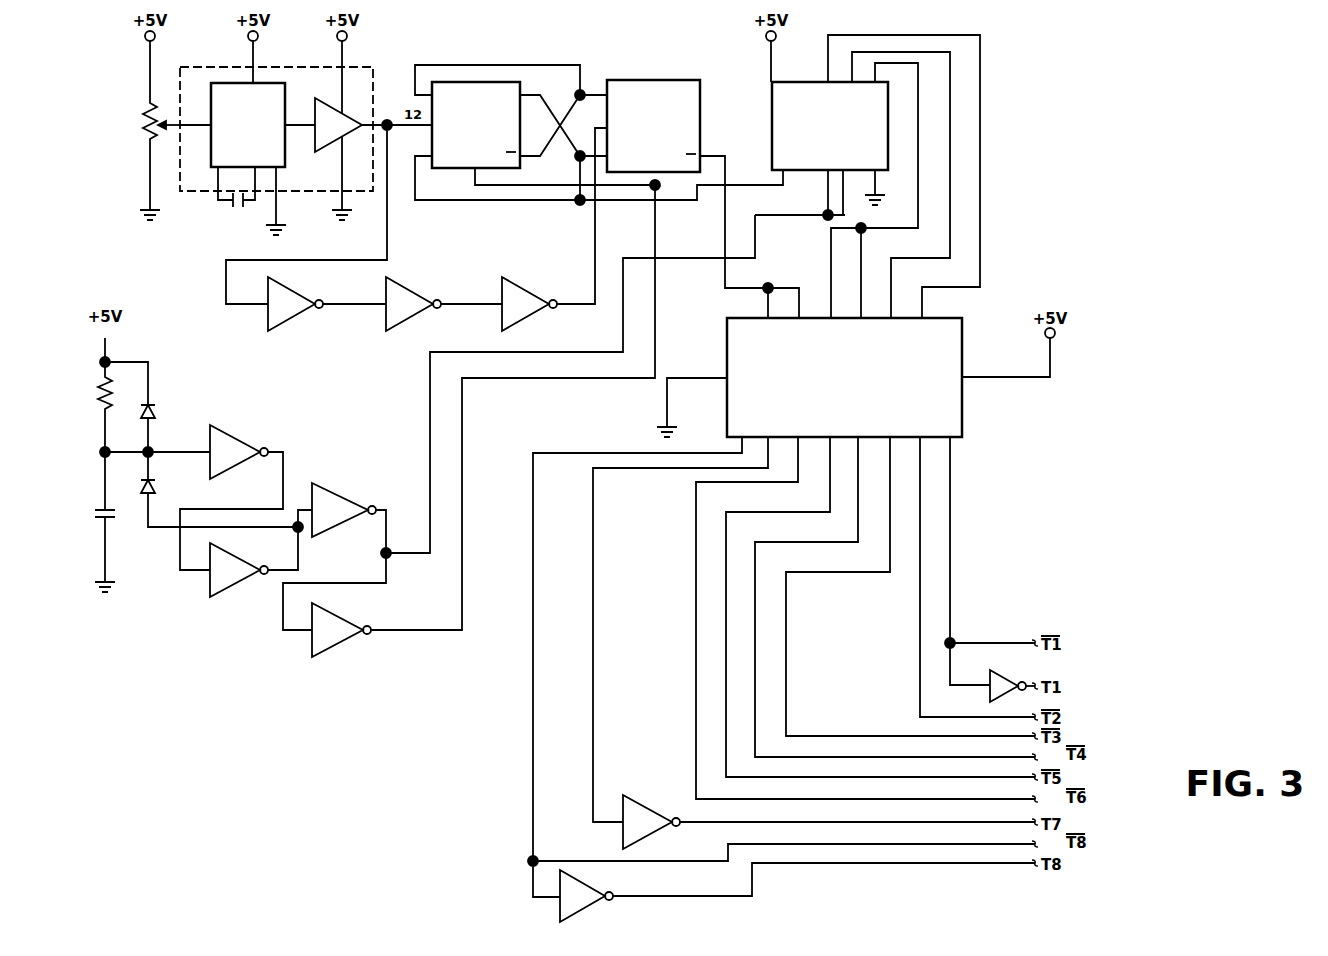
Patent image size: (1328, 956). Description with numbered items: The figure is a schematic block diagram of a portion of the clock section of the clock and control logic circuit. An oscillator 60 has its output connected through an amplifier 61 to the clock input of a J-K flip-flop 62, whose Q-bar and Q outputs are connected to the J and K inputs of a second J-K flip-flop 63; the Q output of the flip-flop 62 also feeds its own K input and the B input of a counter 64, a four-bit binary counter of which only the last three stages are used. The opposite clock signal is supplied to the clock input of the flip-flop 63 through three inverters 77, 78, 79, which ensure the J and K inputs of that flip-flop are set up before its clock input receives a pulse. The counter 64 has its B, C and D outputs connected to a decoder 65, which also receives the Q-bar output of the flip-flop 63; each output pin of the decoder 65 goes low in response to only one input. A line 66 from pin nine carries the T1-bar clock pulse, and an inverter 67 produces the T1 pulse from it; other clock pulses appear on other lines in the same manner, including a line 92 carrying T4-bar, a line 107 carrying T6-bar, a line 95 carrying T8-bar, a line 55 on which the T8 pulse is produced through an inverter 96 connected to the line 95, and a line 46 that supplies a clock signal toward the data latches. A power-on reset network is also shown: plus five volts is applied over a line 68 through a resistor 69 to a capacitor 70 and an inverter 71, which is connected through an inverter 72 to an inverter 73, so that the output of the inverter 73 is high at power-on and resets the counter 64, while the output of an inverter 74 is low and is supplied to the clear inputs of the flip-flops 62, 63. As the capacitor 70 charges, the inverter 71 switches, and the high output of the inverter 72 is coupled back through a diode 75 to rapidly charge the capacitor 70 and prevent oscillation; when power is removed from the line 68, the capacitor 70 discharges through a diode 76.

The oscillator 60 is at (230, 83).
The amplifier 61 is at (357, 120).
The J-K flip-flop 62 is at (473, 82).
The J-K flip-flop 63 is at (700, 117).
The counter 64 is at (772, 88).
The decoder 65 is at (727, 338).
The line 66 is at (950, 557).
The inverter 67 is at (1010, 690).
The line 68 is at (108, 350).
The resistor 69 is at (108, 389).
The capacitor 70 is at (110, 516).
The inverter 71 is at (218, 432).
The inverter 72 is at (218, 596).
The inverter 73 is at (335, 495).
The inverter 74 is at (330, 646).
The diode 75 is at (156, 490).
The diode 76 is at (152, 405).
The inverter 77 is at (300, 326).
The inverter 78 is at (417, 326).
The inverter 79 is at (522, 326).
The line 92 is at (926, 757).
The line 95 is at (533, 698).
The inverter 96 is at (600, 898).
The line 107 is at (696, 657).
The line 46 is at (926, 823).
The line 55 is at (692, 896).